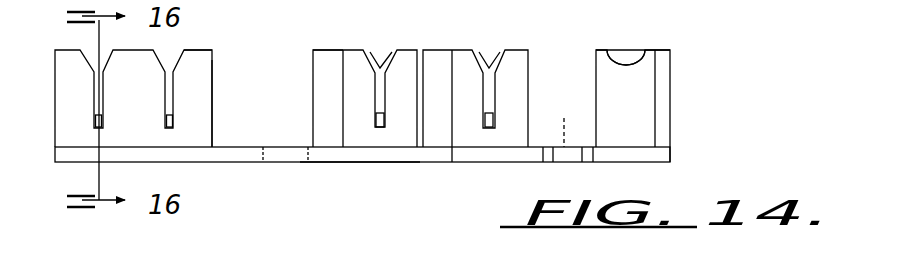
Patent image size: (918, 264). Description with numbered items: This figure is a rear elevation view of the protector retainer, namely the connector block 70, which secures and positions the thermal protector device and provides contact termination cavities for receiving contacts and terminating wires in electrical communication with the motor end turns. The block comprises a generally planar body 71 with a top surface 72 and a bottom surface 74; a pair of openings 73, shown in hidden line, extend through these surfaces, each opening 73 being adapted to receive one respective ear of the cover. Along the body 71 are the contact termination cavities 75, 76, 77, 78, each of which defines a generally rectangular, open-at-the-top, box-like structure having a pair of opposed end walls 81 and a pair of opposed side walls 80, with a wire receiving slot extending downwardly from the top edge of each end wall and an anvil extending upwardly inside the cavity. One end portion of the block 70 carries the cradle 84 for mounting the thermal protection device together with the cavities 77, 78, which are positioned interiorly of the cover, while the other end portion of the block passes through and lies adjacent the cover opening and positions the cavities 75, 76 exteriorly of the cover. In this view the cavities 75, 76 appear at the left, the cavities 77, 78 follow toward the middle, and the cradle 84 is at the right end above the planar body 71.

The connector block 70 is at (684, 62).
The planar body 71 is at (237, 155).
The top surface 72 is at (627, 143).
The opening 73 is at (295, 152).
The bottom surface 74 is at (357, 162).
The contact termination cavity 75 is at (65, 95).
The contact termination cavity 76 is at (213, 92).
The contact termination cavity 77 is at (313, 111).
The contact termination cavity 78 is at (517, 76).
The side wall 80 is at (328, 63).
The end wall 81 is at (200, 62).
The cradle 84 is at (637, 90).